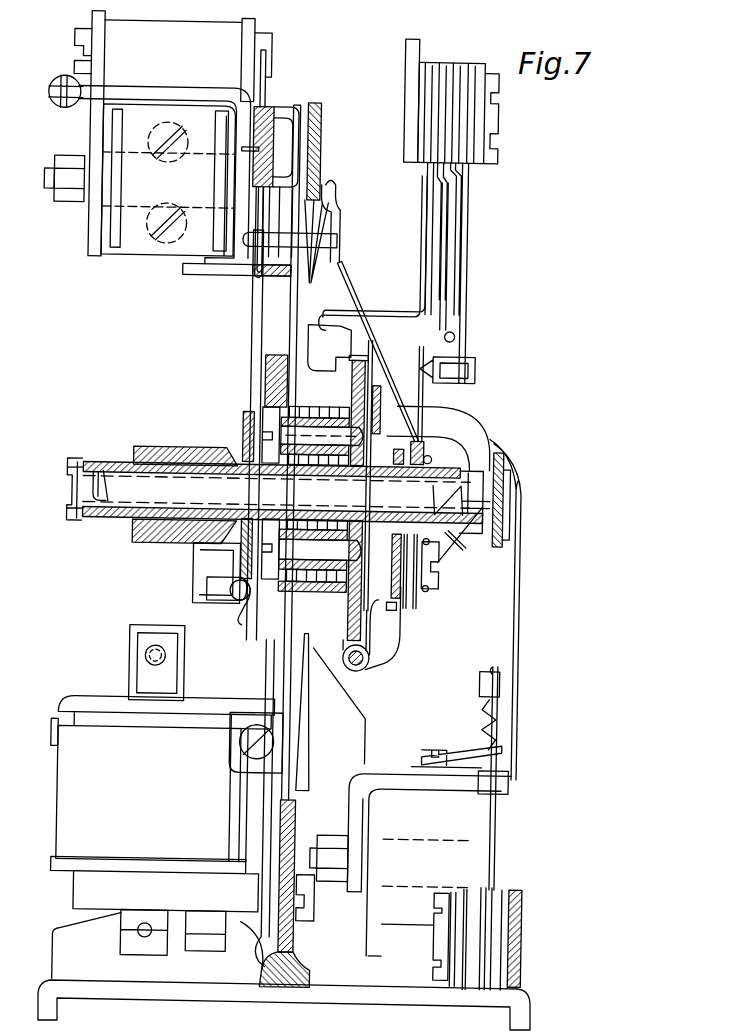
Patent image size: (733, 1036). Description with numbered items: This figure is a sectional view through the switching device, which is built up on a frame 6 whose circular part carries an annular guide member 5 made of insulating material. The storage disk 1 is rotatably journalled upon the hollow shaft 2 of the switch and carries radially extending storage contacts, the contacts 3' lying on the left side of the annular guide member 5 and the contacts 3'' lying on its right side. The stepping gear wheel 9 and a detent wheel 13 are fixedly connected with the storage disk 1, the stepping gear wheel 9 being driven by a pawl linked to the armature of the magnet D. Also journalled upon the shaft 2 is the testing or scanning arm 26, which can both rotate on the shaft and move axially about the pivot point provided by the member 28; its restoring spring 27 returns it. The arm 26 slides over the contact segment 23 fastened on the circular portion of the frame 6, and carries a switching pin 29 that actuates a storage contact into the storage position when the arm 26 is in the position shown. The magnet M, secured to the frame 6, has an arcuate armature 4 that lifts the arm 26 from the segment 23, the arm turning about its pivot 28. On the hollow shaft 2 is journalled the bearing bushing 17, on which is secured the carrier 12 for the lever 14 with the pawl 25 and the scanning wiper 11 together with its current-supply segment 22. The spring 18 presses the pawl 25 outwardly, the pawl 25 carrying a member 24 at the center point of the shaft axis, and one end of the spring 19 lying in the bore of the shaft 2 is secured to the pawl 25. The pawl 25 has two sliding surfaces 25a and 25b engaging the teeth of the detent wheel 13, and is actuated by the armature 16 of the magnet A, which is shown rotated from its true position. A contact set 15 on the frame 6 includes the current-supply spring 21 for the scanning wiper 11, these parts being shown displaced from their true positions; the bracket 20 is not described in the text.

The magnet M is at (130, 230).
The contact segment 23 is at (262, 65).
The frame 6 is at (280, 107).
The annular guide member 5 is at (313, 105).
The contact set 15 is at (470, 182).
The current-supply spring 21 is at (437, 280).
The bracket 20 is at (420, 284).
The storage contacts 3'' is at (356, 232).
The switching pin 29 is at (325, 245).
The scanning wiper 11 is at (338, 270).
The storage disk 1 is at (320, 335).
The storage contacts 3' is at (258, 510).
The arcuate armature 4 is at (253, 293).
The testing or scanning arm 26 is at (260, 293).
The stepping gear wheel 9 is at (272, 385).
The hollow shaft 2 is at (125, 466).
The spring 19 is at (104, 468).
The current-supply segment 22 is at (413, 613).
The sliding surface 25b is at (340, 350).
The sliding surface 25a is at (372, 372).
The pawl 25 is at (463, 423).
The member 24 is at (507, 517).
The spring 18 is at (507, 480).
The bearing bushing 17 is at (462, 538).
The carrier 12 is at (403, 573).
The detent wheel 13 is at (353, 637).
The lever 14 is at (370, 623).
The restoring spring 27 is at (223, 592).
The pivot member 28 is at (253, 610).
The magnet D is at (88, 740).
The magnet A is at (453, 817).
The armature 16 is at (513, 720).